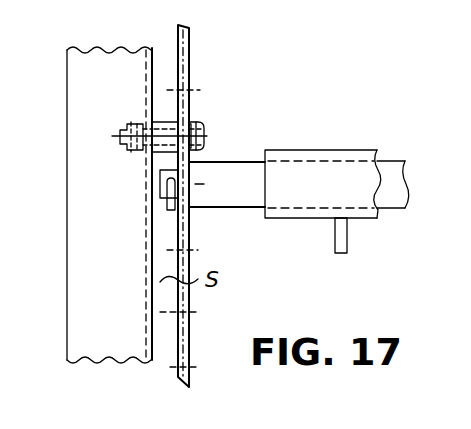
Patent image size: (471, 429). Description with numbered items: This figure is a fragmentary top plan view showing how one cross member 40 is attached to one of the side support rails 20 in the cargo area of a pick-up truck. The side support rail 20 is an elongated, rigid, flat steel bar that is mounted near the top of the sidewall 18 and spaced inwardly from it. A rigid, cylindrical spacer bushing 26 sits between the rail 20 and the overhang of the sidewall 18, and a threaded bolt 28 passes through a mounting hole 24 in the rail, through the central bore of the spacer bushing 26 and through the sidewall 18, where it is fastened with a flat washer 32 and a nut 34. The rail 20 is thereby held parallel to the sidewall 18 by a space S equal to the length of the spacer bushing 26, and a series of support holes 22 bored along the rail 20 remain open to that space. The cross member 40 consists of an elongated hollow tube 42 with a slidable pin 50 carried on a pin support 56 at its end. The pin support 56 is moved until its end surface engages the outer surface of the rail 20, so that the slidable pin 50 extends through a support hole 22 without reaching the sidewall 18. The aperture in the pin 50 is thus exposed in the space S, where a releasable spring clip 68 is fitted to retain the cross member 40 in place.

The sidewall 18 is at (153, 67).
The side support rail 20 is at (193, 47).
The support hole 22 is at (193, 80).
The mounting hole 24 is at (203, 149).
The spacer bushing 26 is at (156, 122).
The threaded bolt 28 is at (204, 133).
The flat washer 32 is at (143, 167).
The nut 34 is at (132, 118).
The cross member 40 is at (351, 180).
The hollow tube 42 is at (348, 155).
The slidable pin 50 is at (158, 193).
The pin support 56 is at (237, 193).
The spring clip 68 is at (166, 213).